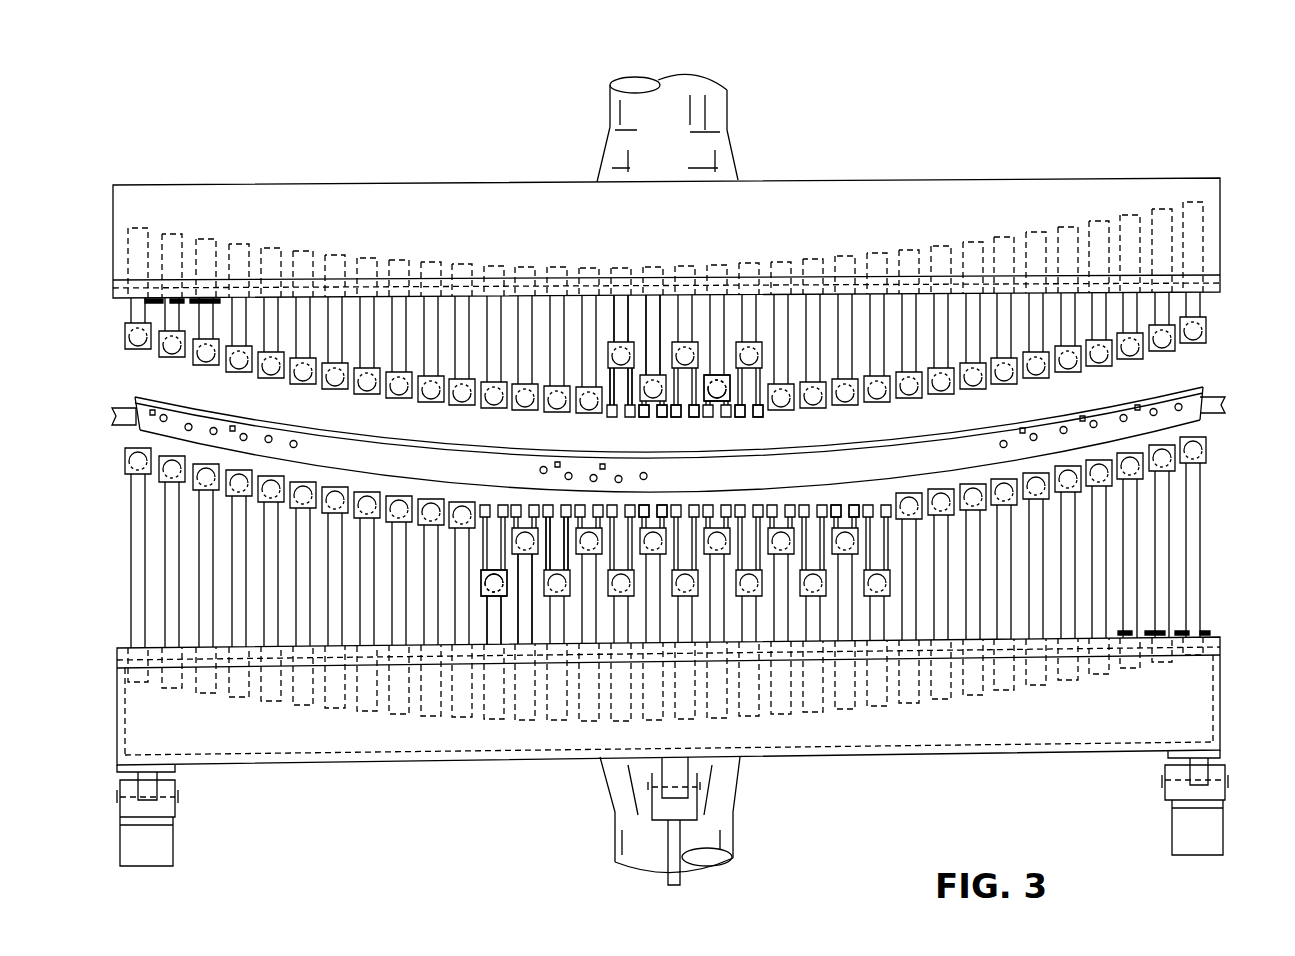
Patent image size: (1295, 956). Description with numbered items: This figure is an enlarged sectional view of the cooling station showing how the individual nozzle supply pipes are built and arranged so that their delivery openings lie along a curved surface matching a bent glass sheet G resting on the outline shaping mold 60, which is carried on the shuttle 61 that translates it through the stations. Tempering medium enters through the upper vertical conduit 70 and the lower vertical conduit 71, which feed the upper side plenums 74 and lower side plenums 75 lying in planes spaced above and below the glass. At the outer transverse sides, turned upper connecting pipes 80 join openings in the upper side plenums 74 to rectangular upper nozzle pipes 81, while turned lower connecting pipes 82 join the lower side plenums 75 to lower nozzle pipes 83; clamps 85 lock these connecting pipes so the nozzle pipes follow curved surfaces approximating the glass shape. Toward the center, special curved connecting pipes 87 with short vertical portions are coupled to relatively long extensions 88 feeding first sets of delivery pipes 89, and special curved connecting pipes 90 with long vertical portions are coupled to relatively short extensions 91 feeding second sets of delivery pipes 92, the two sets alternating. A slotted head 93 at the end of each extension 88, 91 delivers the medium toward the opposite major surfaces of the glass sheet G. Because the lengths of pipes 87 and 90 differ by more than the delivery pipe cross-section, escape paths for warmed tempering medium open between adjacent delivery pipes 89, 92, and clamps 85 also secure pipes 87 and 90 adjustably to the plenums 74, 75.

The outline shaping mold 60 is at (1203, 420).
The shuttle 61 is at (1225, 402).
The upper vertical conduit 70 is at (744, 106).
The lower vertical conduit 71 is at (735, 838).
The upper side plenums 74 is at (464, 226).
The lower side plenums 75 is at (284, 750).
The upper connecting pipes 80 is at (128, 306).
The upper nozzle pipes 81 is at (125, 340).
The lower connecting pipes 82 is at (130, 557).
The lower nozzle pipes 83 is at (125, 462).
The clamps 85 is at (118, 300).
The special curved connecting pipes having short vertical portions 87 is at (612, 327).
The relatively long extensions 88 is at (545, 515).
The delivery pipes of the first sets 89 is at (730, 342).
The special curved connecting pipes having long vertical portions 90 is at (682, 337).
The relatively short extensions 91 is at (660, 418).
The delivery pipes of the second sets 92 is at (707, 418).
The slotted head 93 is at (840, 507).
The glass sheet G is at (1073, 420).